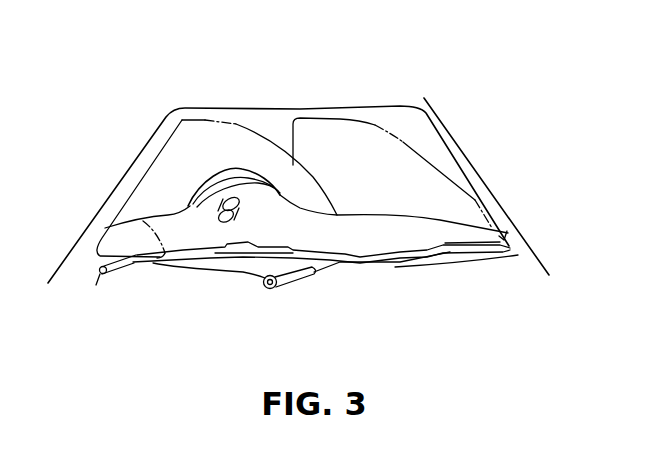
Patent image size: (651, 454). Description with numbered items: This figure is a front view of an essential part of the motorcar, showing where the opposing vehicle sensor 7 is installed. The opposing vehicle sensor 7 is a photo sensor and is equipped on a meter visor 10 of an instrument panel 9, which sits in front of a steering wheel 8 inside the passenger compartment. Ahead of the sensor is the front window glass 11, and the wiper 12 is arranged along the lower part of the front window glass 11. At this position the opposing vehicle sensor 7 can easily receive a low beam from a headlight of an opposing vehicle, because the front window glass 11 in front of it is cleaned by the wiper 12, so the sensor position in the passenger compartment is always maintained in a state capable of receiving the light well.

The opposing vehicle sensor 7 is at (187, 208).
The steering wheel 8 is at (232, 167).
The instrument panel 9 is at (427, 205).
The meter visor 10 is at (273, 212).
The front window glass 11 is at (400, 108).
The wiper 12 is at (451, 253).